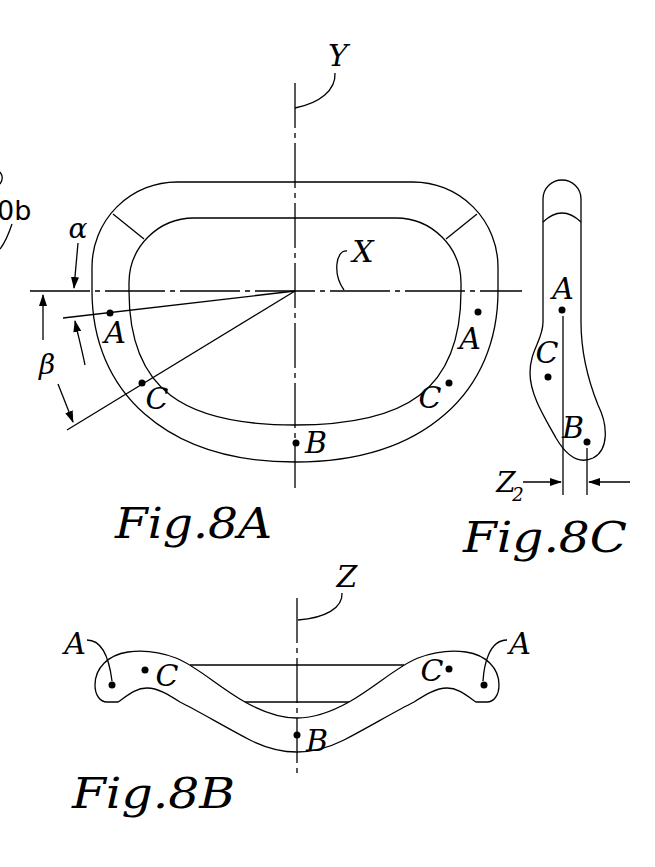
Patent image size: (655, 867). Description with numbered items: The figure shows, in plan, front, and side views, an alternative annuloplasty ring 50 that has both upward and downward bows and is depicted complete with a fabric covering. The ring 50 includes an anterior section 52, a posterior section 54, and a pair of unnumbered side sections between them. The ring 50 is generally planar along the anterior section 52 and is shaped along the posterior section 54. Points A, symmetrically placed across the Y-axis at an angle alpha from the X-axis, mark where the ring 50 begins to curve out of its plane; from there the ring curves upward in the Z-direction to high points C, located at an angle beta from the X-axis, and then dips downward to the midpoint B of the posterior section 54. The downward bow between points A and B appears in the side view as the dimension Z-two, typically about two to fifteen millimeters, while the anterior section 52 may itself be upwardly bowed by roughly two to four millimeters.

In FIG. 8A, the annuloplasty ring 50 is at (295, 290).
In FIG. 8A, the anterior section 52 is at (198, 178).
In FIG. 8B, the anterior section 52 is at (345, 660).
In FIG. 8A, the posterior section 54 is at (396, 454).
In FIG. 8B, the posterior section 54 is at (353, 742).